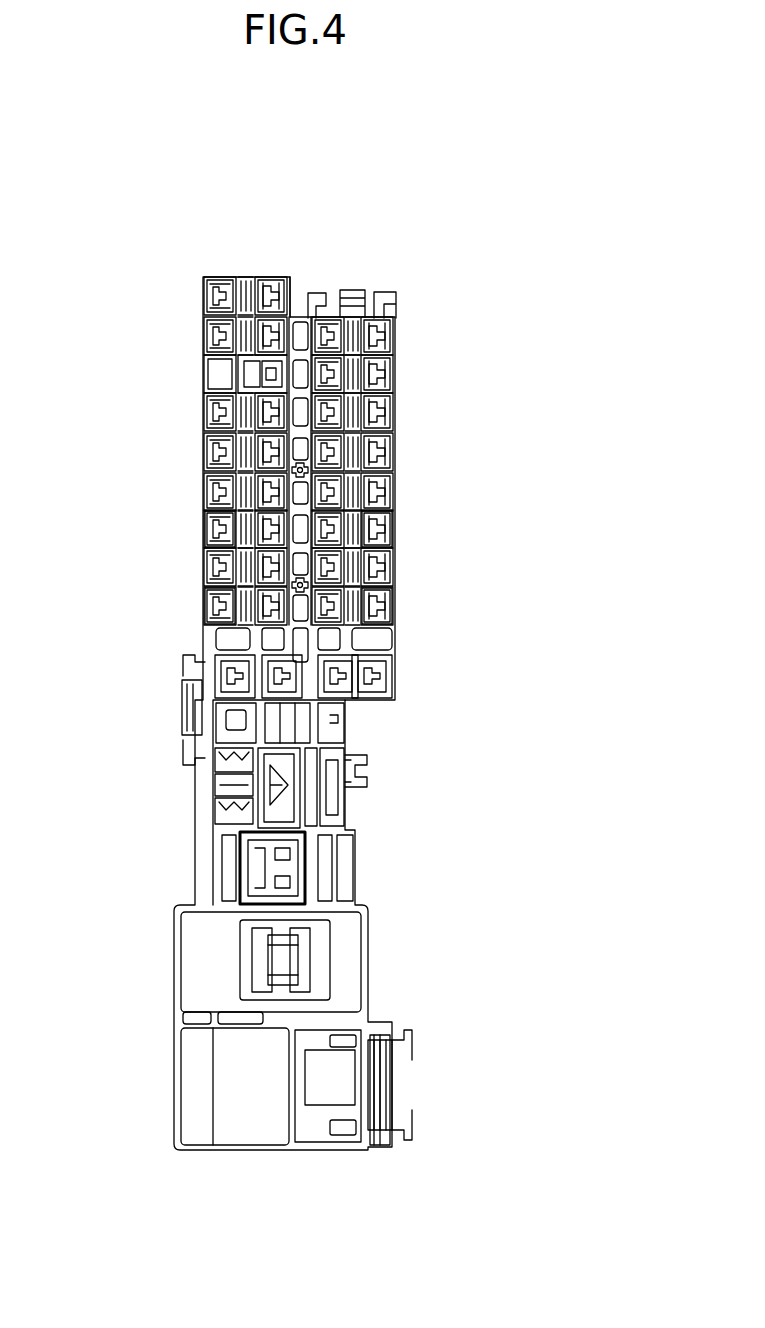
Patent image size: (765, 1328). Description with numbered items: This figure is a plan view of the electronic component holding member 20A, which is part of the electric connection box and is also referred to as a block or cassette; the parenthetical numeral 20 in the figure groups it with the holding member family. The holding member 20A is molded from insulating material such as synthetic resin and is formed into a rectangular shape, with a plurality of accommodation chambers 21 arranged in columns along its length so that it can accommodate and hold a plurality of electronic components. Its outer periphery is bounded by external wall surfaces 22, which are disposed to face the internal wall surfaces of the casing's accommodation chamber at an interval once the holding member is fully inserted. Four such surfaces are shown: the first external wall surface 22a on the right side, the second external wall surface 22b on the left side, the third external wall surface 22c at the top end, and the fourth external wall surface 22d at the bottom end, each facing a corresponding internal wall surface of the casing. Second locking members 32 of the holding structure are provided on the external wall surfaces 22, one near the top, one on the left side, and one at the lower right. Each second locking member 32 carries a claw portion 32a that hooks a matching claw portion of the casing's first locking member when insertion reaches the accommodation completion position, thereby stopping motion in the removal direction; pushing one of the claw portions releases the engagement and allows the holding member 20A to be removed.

The electronic component holding member 20A is at (318, 190).
The electrical connection box 20 is at (317, 677).
The accommodation chamber 21 is at (200, 520).
The external wall surface 22 is at (328, 720).
The first external wall surface 22a is at (395, 444).
The second external wall surface 22b is at (200, 418).
The third external wall surface 22c is at (247, 275).
The fourth external wall surface 22d is at (236, 1152).
The second locking member 32 is at (380, 272).
The claw portion 32a is at (347, 290).